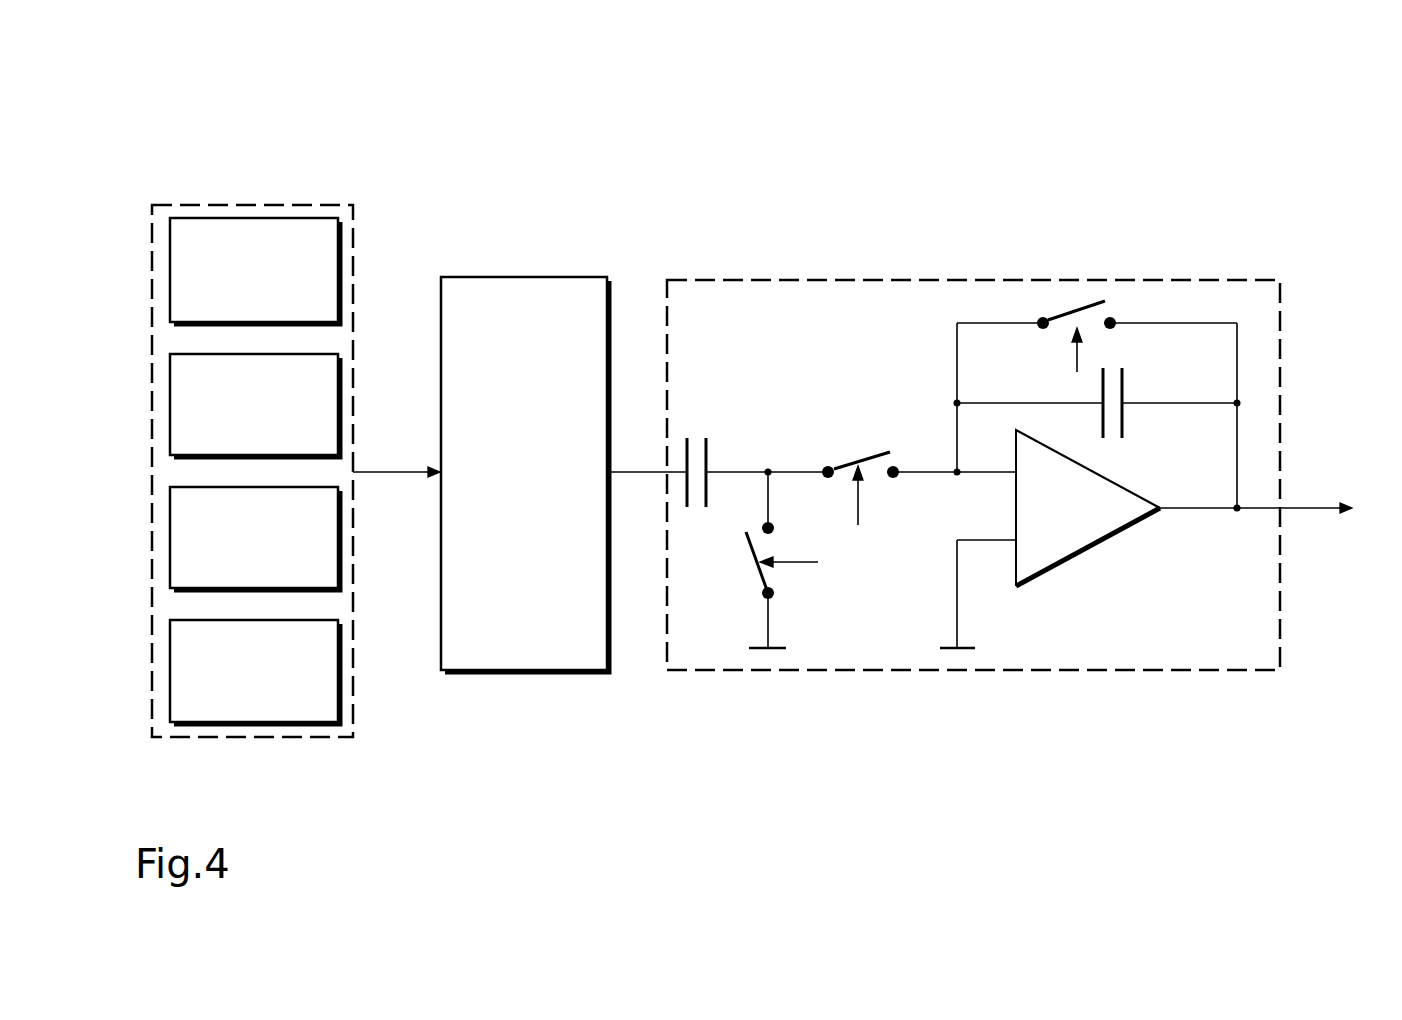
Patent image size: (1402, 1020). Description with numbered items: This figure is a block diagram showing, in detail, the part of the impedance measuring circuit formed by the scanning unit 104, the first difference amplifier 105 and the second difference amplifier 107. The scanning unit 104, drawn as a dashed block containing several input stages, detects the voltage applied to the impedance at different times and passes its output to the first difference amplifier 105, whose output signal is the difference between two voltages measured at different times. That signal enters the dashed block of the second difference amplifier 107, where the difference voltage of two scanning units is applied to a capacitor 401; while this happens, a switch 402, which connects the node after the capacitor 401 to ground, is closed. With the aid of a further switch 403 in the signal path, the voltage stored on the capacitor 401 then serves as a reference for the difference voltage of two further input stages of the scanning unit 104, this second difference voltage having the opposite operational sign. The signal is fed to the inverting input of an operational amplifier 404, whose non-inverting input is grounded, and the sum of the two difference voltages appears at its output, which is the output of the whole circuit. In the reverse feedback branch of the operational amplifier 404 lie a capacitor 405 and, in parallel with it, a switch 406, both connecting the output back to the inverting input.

The scanning unit 104 is at (208, 205).
The first difference amplifier 105 is at (522, 275).
The second difference amplifier 107 is at (762, 278).
The capacitor 401 is at (686, 452).
The switch 402 is at (750, 548).
The further switch 403 is at (870, 452).
The operational amplifier 404 is at (1102, 538).
The capacitor 405 is at (1125, 381).
The switch 406 is at (1090, 305).